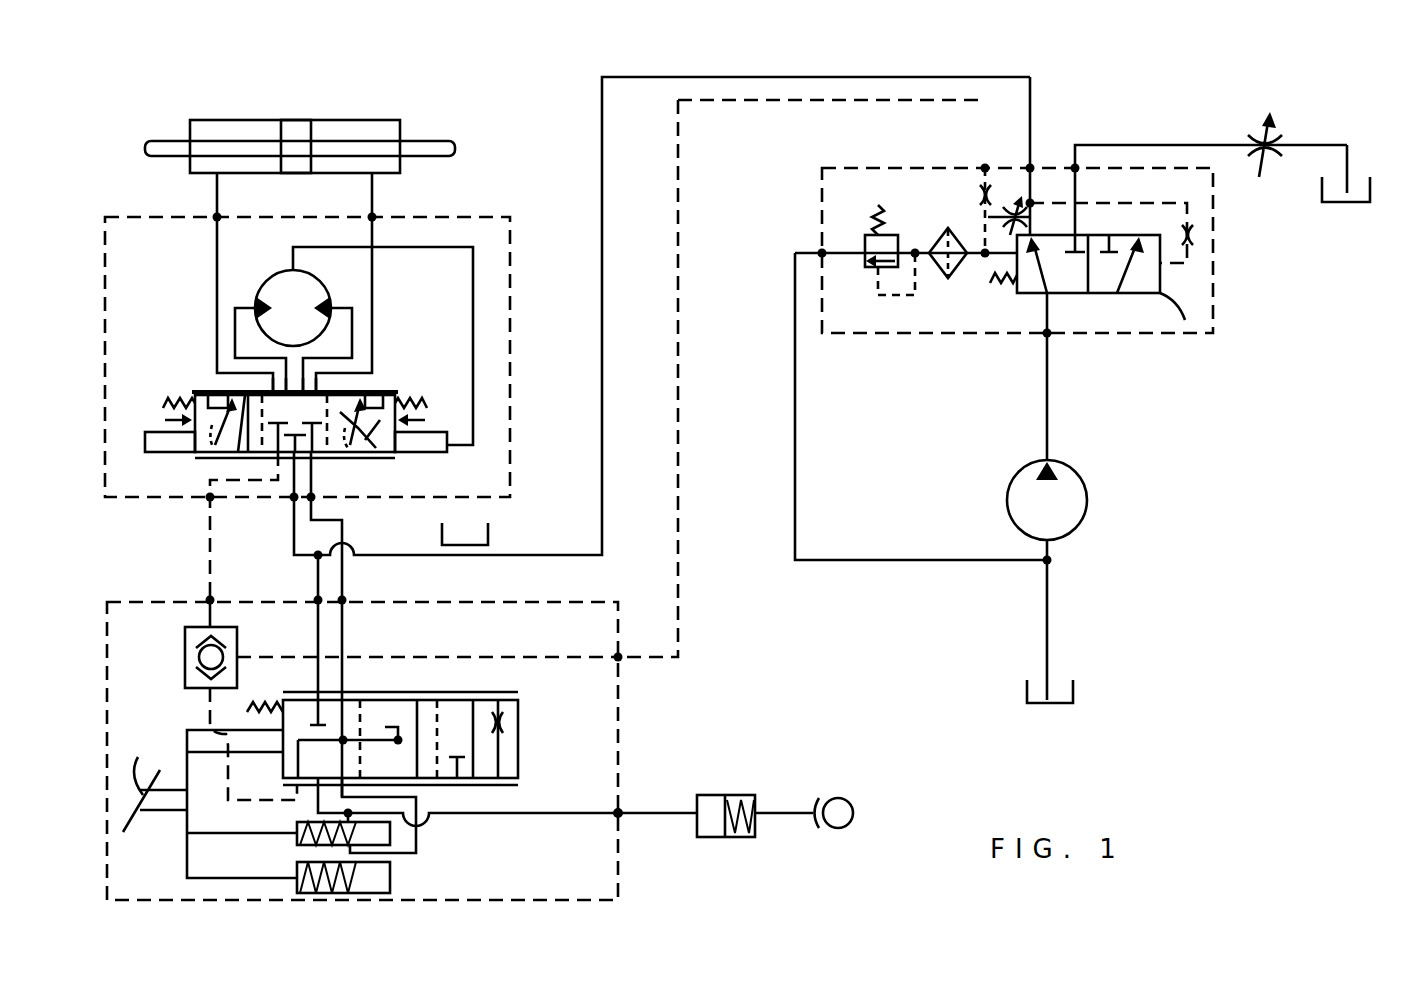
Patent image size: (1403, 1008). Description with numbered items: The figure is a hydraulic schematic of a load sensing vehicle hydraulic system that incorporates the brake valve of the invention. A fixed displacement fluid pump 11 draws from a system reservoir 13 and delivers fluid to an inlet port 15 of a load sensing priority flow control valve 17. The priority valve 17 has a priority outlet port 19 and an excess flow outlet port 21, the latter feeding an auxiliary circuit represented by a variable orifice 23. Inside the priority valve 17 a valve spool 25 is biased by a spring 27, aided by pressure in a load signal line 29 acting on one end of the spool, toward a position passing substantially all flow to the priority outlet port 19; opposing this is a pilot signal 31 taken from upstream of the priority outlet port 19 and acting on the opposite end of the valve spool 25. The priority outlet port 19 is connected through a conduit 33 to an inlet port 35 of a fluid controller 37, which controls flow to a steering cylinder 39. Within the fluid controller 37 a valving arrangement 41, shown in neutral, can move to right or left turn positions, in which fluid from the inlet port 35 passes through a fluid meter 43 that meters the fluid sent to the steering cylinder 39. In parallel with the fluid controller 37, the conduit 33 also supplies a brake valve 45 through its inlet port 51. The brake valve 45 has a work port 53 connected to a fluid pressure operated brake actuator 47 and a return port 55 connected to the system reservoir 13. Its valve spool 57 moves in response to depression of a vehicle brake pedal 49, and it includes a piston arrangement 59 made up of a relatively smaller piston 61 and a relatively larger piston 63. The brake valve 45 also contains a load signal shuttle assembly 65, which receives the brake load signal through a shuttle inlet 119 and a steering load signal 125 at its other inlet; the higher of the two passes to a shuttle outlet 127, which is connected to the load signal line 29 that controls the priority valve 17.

The fixed displacement fluid pump 11 is at (1087, 490).
The system reservoir 13 is at (488, 532).
The inlet port 15 is at (1045, 336).
The load sensing priority flow control valve 17 is at (815, 198).
The priority outlet port 19 is at (1029, 165).
The excess flow outlet port 21 is at (1075, 165).
The variable orifice 23 is at (1250, 128).
The valve spool 25 is at (1185, 320).
The spring 27 is at (992, 282).
The load signal line 29 is at (678, 480).
The pilot signal 31 is at (1090, 210).
The conduit 33 is at (600, 140).
The inlet port 35 is at (292, 500).
The fluid controller 37 is at (120, 212).
The steering cylinder 39 is at (345, 118).
The valving arrangement 41 is at (376, 392).
The fluid meter 43 is at (278, 274).
The brake valve 45 is at (636, 718).
The fluid pressure operated brake actuator 47 is at (722, 795).
The vehicle brake pedal 49 is at (152, 780).
The inlet port 51 is at (316, 598).
The work port 53 is at (620, 810).
The return port 55 is at (345, 598).
The valve spool 57 is at (520, 700).
The piston arrangement 59 is at (425, 874).
The smaller piston 61 is at (297, 826).
The larger piston 63 is at (297, 868).
The load signal shuttle assembly 65 is at (200, 680).
The shuttle inlet 119 is at (210, 690).
The steering load signal 125 is at (205, 566).
The shuttle outlet 127 is at (238, 657).